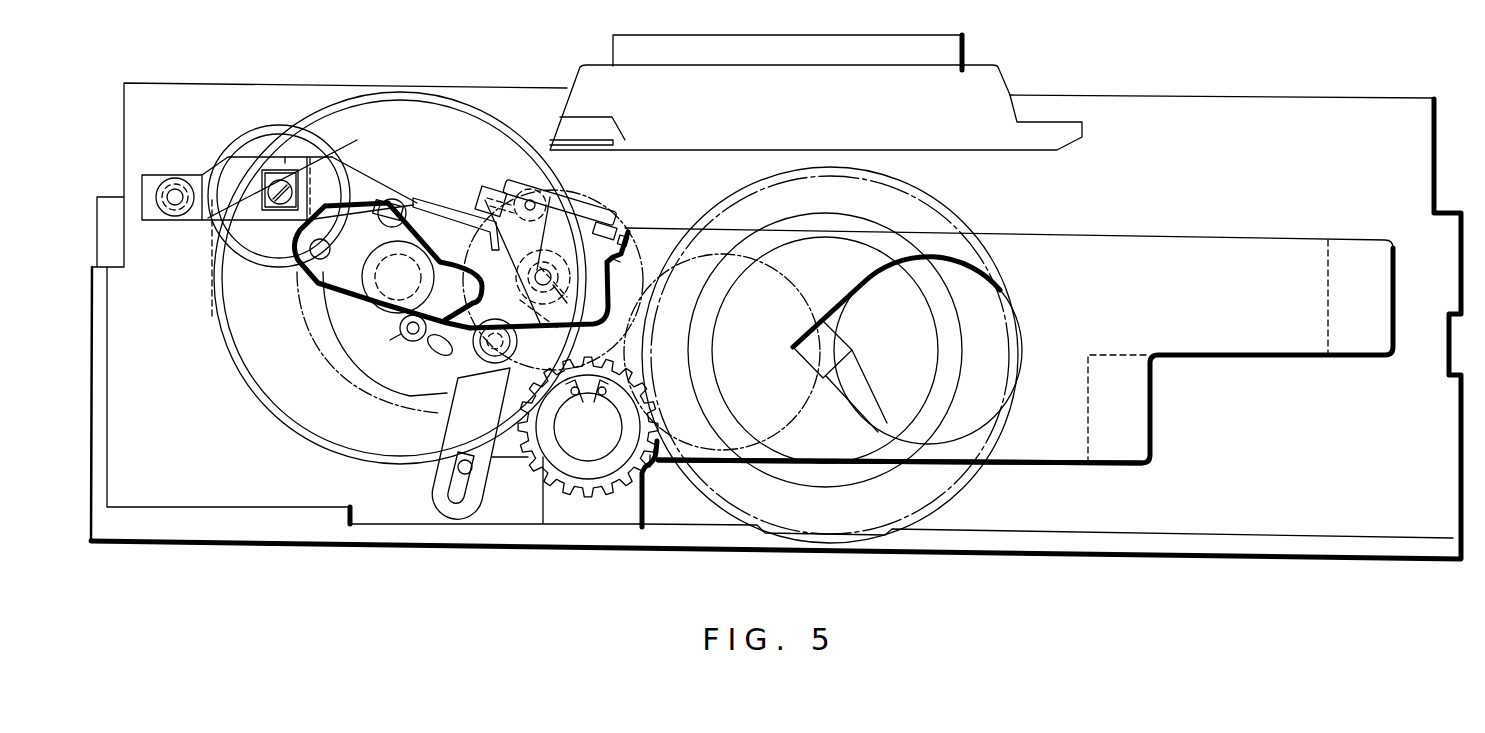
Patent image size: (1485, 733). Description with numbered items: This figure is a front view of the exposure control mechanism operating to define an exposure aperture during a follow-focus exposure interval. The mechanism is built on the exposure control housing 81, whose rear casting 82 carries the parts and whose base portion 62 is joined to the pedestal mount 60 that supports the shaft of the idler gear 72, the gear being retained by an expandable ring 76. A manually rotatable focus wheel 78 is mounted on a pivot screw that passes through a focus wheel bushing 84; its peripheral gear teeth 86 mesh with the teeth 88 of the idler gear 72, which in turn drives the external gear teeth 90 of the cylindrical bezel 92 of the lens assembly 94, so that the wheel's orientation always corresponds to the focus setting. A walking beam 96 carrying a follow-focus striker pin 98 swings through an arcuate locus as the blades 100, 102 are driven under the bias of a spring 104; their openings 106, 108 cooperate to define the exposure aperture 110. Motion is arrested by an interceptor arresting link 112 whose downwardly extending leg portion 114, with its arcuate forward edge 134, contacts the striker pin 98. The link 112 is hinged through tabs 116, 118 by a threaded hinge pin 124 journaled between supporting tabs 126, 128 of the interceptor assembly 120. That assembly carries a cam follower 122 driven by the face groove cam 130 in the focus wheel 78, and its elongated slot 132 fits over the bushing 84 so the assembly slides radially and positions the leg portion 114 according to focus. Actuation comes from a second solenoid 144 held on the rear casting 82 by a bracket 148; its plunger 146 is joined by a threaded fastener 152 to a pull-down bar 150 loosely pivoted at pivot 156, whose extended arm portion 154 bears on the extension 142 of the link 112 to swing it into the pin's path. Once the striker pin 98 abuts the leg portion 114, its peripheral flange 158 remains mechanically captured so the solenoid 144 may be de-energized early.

The pedestal mount 60 is at (643, 515).
The base portion 62 is at (1284, 535).
The idler gear 72 is at (543, 468).
The expandable ring 76 is at (628, 413).
The focus wheel 78 is at (337, 425).
The exposure control housing 81 is at (1278, 75).
The rear casting 82 is at (358, 85).
The focus wheel bushing 84 is at (370, 300).
The gear teeth 86 is at (566, 362).
The teeth 88 is at (619, 488).
The external gear teeth 90 is at (652, 462).
The cylindrical bezel 92 is at (800, 508).
The lens assembly 94 is at (972, 202).
The walking beam 96 is at (533, 449).
The follow-focus striker pin 98 is at (545, 265).
The blade 100 is at (1328, 276).
The blade 102 is at (1367, 248).
The spring 104 is at (460, 357).
The opening 106 is at (773, 270).
The opening 108 is at (873, 282).
The exposure aperture 110 is at (836, 352).
The interceptor arresting link 112 is at (571, 213).
The leg portion 114 is at (475, 290).
The tab 116 is at (512, 172).
The tab 118 is at (615, 225).
The interceptor assembly 120 is at (632, 230).
The cam follower 122 is at (313, 255).
The threaded hinge pin 124 is at (598, 206).
The supporting tab 126 is at (616, 258).
The supporting tab 128 is at (487, 210).
The face groove cam 130 is at (313, 352).
The elongated slot 132 is at (425, 278).
The arcuate forward edge 134 is at (518, 340).
The extension 142 is at (436, 205).
The second solenoid 144 is at (274, 127).
The plunger 146 is at (290, 170).
The bracket 148 is at (340, 158).
The pull-down bar 150 is at (160, 222).
The threaded fastener 152 is at (210, 222).
The extended arm portion 154 is at (398, 198).
The pivot 156 is at (176, 190).
The peripheral flange 158 is at (613, 283).